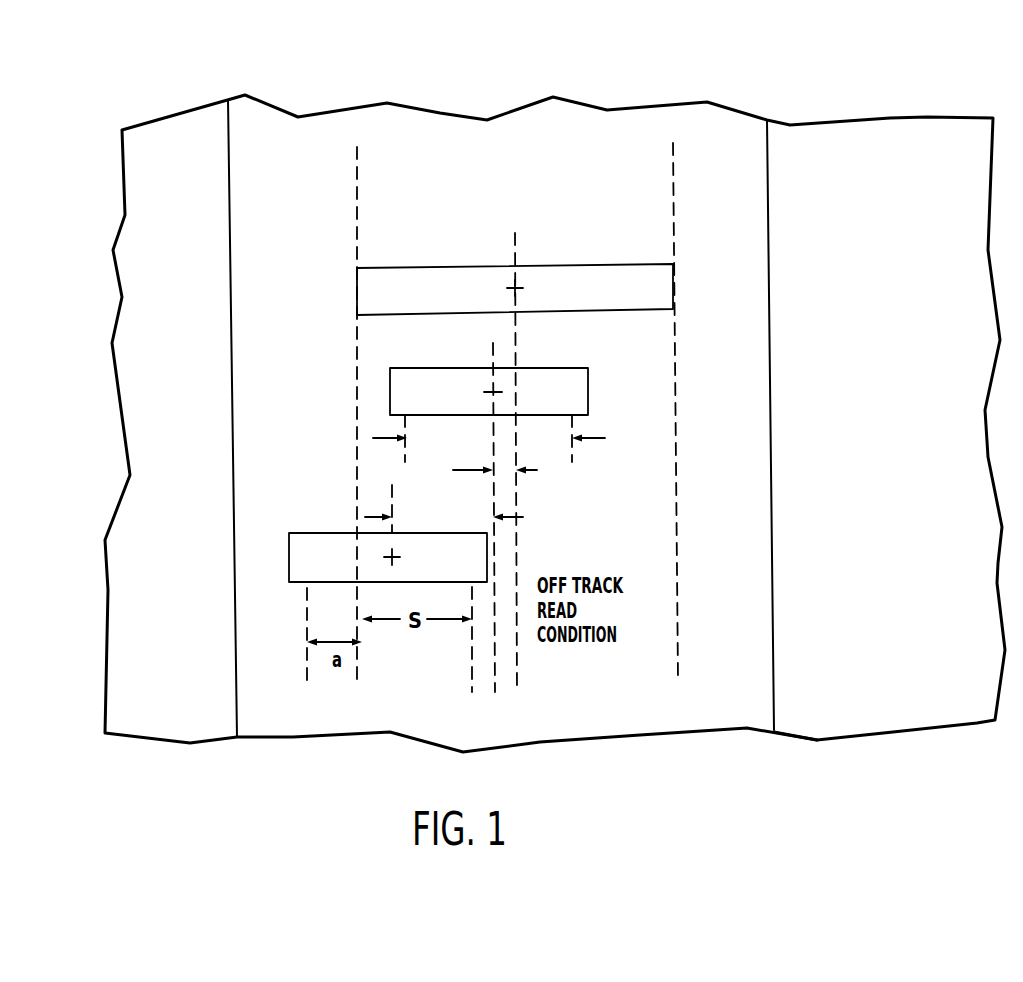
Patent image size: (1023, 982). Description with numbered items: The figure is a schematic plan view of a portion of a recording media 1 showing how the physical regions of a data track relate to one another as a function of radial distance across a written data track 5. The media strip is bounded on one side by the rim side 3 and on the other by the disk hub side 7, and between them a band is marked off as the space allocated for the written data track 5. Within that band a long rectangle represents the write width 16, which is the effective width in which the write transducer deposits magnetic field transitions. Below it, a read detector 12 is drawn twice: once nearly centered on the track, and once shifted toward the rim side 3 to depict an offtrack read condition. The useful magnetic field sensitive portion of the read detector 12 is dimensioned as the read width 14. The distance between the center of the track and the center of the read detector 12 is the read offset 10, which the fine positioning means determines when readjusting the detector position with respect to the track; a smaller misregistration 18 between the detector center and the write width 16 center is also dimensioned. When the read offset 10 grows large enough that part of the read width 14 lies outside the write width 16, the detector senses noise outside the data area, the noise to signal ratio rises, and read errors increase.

The recording media 1 is at (784, 112).
The rim side (N) 3 is at (172, 727).
The written data track 5 is at (753, 232).
The disk hub side (P) 7 is at (890, 710).
The read offset 10 is at (567, 537).
The read detector 12 is at (320, 513).
The read width 14 is at (383, 438).
The write width 16 is at (538, 266).
The misregistration 18 is at (577, 482).